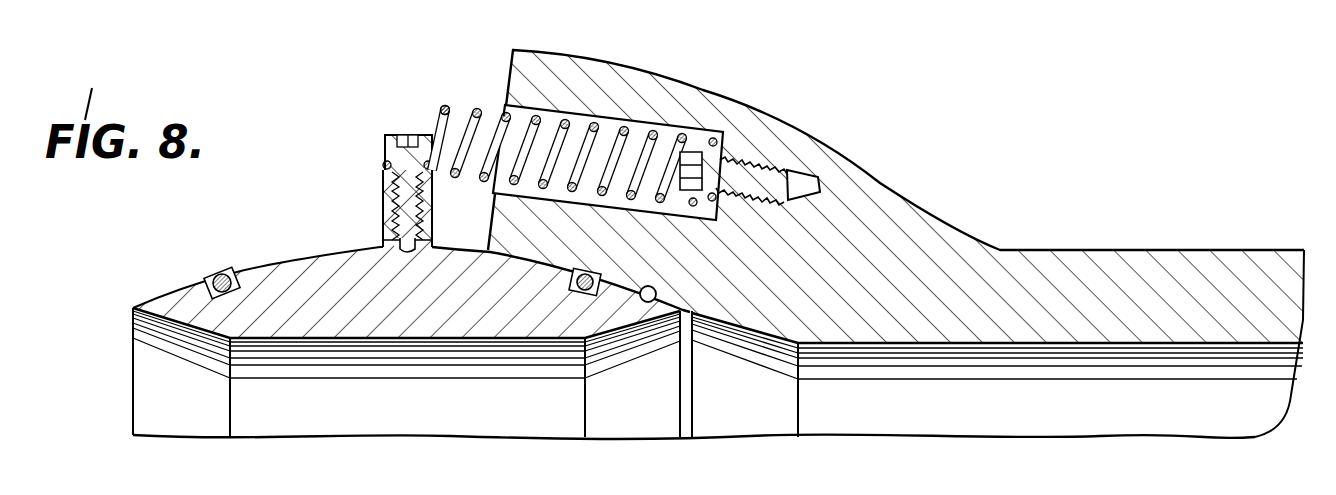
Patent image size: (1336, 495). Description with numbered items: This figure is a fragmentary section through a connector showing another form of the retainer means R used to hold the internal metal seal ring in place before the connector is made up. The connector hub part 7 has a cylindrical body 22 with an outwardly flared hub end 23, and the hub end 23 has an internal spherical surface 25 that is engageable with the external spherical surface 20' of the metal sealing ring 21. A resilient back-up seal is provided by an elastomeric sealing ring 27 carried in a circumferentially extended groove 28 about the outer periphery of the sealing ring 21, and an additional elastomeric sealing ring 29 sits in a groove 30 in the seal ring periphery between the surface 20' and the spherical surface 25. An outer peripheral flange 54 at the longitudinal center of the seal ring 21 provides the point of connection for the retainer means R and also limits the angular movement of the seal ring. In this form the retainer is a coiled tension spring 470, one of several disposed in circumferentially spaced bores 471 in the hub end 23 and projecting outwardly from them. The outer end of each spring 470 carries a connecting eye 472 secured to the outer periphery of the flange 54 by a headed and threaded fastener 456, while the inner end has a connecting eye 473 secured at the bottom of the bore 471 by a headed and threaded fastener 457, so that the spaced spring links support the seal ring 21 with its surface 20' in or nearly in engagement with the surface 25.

The connector hub part 7 is at (1240, 250).
The external spherical surface 20' is at (561, 280).
The metal sealing ring 21 is at (408, 254).
The cylindrical body 22 is at (1128, 276).
The hub end 23 is at (663, 83).
The internal spherical surface 25 is at (652, 292).
The elastomeric sealing ring 27 is at (227, 268).
The groove 28 is at (213, 278).
The elastomeric sealing ring 29 is at (588, 272).
The groove 30 is at (590, 285).
The outer peripheral flange 54 is at (382, 210).
The headed and threaded fastener 456 is at (383, 147).
The headed and threaded fastener 457 is at (758, 192).
The tension spring 470 is at (445, 107).
The bore 471 is at (578, 112).
The connecting eye 472 is at (384, 167).
The connecting eye 473 is at (723, 153).
The retainer means R is at (437, 88).